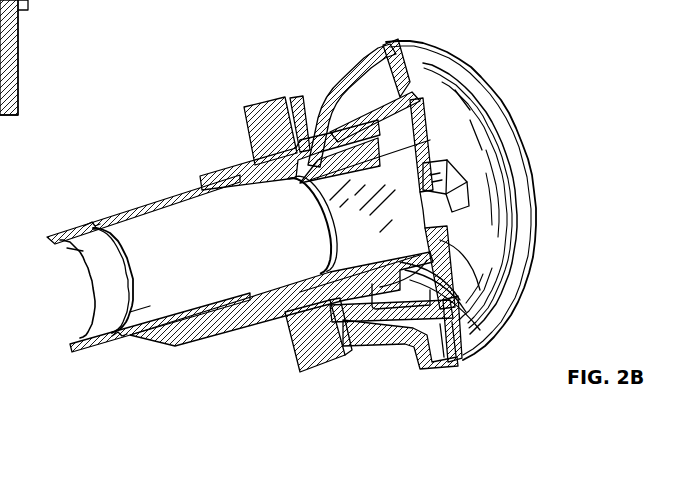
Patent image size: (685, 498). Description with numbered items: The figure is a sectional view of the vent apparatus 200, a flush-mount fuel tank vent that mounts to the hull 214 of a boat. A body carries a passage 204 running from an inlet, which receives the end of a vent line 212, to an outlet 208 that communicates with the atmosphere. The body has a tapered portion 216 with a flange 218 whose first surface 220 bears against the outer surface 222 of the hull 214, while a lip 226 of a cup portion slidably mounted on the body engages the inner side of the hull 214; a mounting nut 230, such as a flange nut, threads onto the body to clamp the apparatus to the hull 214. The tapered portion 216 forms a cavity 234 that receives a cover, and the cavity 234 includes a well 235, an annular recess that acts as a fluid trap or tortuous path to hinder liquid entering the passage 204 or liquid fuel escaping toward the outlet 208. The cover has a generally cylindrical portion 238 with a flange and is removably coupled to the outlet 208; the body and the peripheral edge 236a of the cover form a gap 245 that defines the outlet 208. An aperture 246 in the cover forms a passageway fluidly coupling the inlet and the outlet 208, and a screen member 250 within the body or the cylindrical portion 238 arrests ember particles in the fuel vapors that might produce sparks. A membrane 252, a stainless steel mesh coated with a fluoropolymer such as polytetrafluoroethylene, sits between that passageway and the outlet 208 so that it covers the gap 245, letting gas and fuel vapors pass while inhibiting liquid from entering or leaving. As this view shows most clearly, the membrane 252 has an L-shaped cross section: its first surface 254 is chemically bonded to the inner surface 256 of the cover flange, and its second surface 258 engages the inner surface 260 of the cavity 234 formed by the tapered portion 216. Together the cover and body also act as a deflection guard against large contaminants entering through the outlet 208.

The vent apparatus 200 is at (103, 170).
The passage 204 is at (277, 259).
The outlet 208 is at (456, 296).
The vent line 212 is at (62, 230).
The hull 214 is at (60, 2).
The tapered portion 216 is at (408, 320).
The flange 218 is at (26, 2).
The first surface 220 is at (38, 1).
The outer surface 222 is at (20, 78).
The lip 226 is at (358, 52).
The mounting nut 230 is at (255, 105).
The cavity 234 is at (356, 116).
The well 235 is at (299, 372).
The peripheral edge 236a is at (64, 3).
The cylindrical portion 238 is at (233, 344).
The gap 245 is at (478, 303).
The aperture 246 is at (466, 227).
The screen member 250 is at (216, 175).
The membrane 252 is at (473, 320).
The first surface 254 is at (440, 88).
The inner surface 256 is at (450, 260).
The second surface 258 is at (400, 36).
The inner surface 260 is at (405, 130).